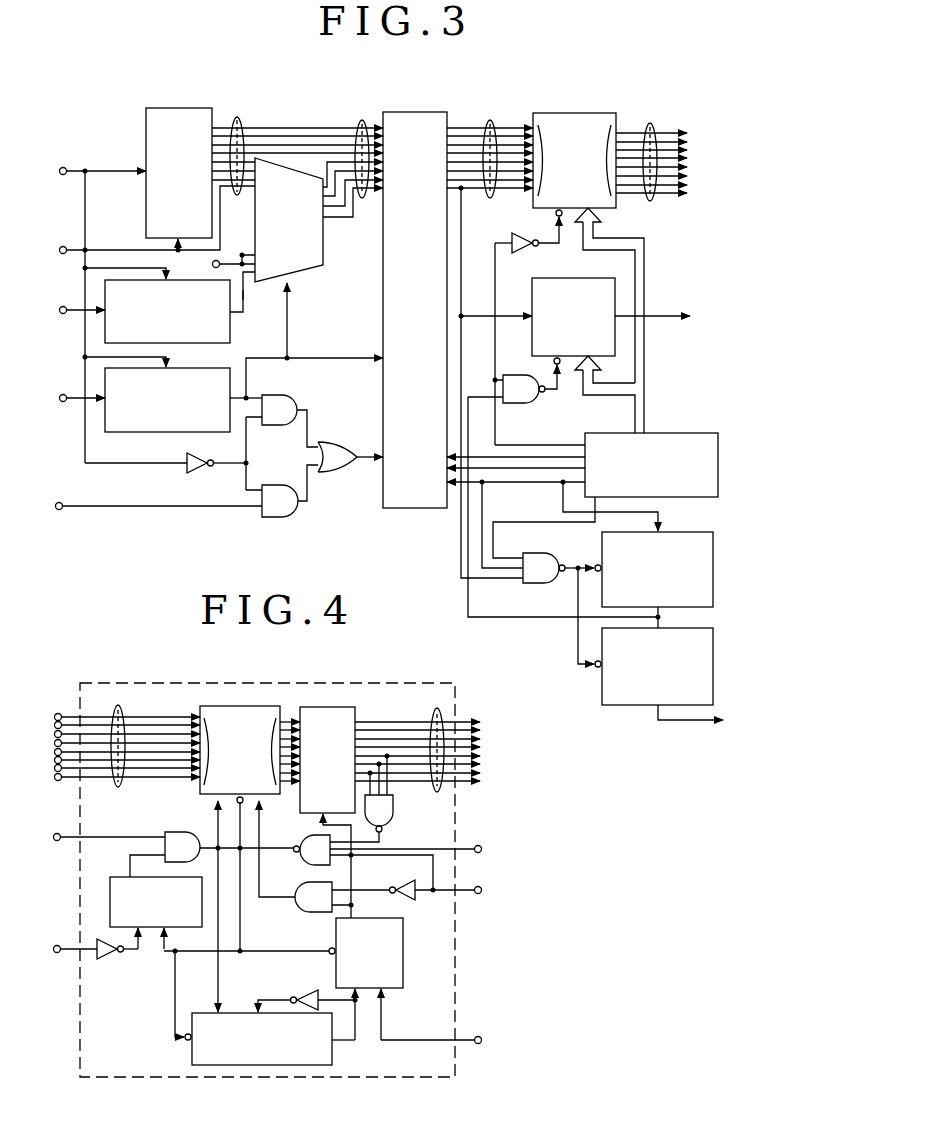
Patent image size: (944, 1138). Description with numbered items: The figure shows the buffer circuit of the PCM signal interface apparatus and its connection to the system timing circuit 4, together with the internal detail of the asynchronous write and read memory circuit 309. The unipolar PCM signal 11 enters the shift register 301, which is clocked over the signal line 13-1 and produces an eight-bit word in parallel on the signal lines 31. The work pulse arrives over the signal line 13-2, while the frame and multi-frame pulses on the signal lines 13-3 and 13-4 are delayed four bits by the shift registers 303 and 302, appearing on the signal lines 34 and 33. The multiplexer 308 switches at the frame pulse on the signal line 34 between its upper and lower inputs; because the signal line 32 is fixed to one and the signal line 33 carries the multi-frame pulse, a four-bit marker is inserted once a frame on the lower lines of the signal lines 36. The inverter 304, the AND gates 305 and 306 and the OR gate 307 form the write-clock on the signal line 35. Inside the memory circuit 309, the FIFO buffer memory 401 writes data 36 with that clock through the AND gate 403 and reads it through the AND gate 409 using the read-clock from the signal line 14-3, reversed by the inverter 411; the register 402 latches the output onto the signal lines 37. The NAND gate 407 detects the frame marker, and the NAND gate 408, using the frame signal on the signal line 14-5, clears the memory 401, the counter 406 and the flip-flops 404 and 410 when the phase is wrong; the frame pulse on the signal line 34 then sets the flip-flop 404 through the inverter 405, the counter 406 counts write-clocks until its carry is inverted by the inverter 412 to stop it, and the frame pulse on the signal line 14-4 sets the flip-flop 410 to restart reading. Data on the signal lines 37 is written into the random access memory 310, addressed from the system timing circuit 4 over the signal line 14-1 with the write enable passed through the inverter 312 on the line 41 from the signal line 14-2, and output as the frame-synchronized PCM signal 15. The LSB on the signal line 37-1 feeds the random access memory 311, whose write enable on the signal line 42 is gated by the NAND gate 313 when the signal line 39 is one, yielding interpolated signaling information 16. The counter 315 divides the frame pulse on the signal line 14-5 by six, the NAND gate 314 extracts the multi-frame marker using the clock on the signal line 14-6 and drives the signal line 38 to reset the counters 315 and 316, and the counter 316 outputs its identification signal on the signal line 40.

In FIG. 3, the system timing circuit 4 is at (651, 465).
In FIG. 3, the unipolar PCM signal 11 is at (80, 248).
In FIG. 3, the signal line 13-1 is at (85, 168).
In FIG. 3, the signal line 13-2 is at (74, 504).
In FIG. 3, the signal line 13-3 is at (76, 396).
In FIG. 3, the signal line 13-4 is at (76, 308).
In FIG. 3, the signal line 14-1 is at (646, 408).
In FIG. 3, the signal line 14-2 is at (518, 436).
In FIG. 3, the signal line 14-3 is at (543, 457).
In FIG. 4, the signal line 14-3 is at (481, 894).
In FIG. 3, the signal line 14-4 is at (505, 470).
In FIG. 4, the signal line 14-4 is at (481, 1037).
In FIG. 3, the signal line 14-5 is at (542, 483).
In FIG. 4, the signal line 14-5 is at (480, 847).
In FIG. 3, the signal line 14-6 is at (543, 523).
In FIG. 3, the signal line group 15 is at (654, 124).
In FIG. 3, the signal line 16 is at (668, 316).
In FIG. 3, the signal lines 31 is at (243, 120).
In FIG. 3, the signal line 32 is at (240, 262).
In FIG. 3, the signal line 33 is at (246, 293).
In FIG. 3, the signal line 34 is at (341, 357).
In FIG. 4, the signal line 34 is at (66, 952).
In FIG. 3, the signal line 35 is at (360, 469).
In FIG. 4, the signal line 35 is at (66, 840).
In FIG. 3, the signal lines 36 is at (358, 121).
In FIG. 4, the signal lines 36 is at (125, 709).
In FIG. 3, the signal lines 37 is at (492, 121).
In FIG. 4, the signal lines 37 is at (432, 711).
In FIG. 3, the signal line 37-1 is at (463, 256).
In FIG. 3, the signal line 38 is at (575, 642).
In FIG. 3, the signal line 39 is at (468, 606).
In FIG. 3, the signal line 40 is at (711, 720).
In FIG. 3, the write enable line 41 is at (546, 245).
In FIG. 3, the signal line 42 is at (548, 390).
In FIG. 3, the shift register 301 is at (179, 173).
In FIG. 3, the shift register 302 is at (180, 307).
In FIG. 3, the shift register 303 is at (183, 400).
In FIG. 3, the inverter 304 is at (200, 468).
In FIG. 3, the AND gate 305 is at (290, 421).
In FIG. 3, the AND gate 306 is at (290, 491).
In FIG. 3, the OR gate 307 is at (337, 457).
In FIG. 3, the multiplexer 308 is at (319, 220).
In FIG. 3, the asynchronous write and read memory circuit 309 is at (415, 310).
In FIG. 4, the asynchronous write and read memory circuit 309 is at (99, 683).
In FIG. 3, the random access memory 310 is at (588, 273).
In FIG. 3, the random access memory 311 is at (547, 355).
In FIG. 3, the inverter 312 is at (519, 254).
In FIG. 3, the NAND gate 313 is at (506, 389).
In FIG. 3, the NAND gate 314 is at (558, 568).
In FIG. 3, the counter 315 is at (654, 569).
In FIG. 3, the counter 316 is at (654, 666).
In FIG. 4, the buffer memory 401 is at (250, 754).
In FIG. 4, the register 402 is at (327, 812).
In FIG. 4, the AND gate 403 is at (229, 906).
In FIG. 4, the flip-flop 404 is at (156, 902).
In FIG. 4, the inverter 405 is at (108, 958).
In FIG. 4, the counter 406 is at (266, 1008).
In FIG. 4, the NAND gate 407 is at (361, 798).
In FIG. 4, the NAND gate 408 is at (364, 862).
In FIG. 4, the AND gate 409 is at (324, 856).
In FIG. 4, the flip-flop 410 is at (283, 979).
In FIG. 4, the inverter 411 is at (410, 898).
In FIG. 4, the inverter 412 is at (309, 996).